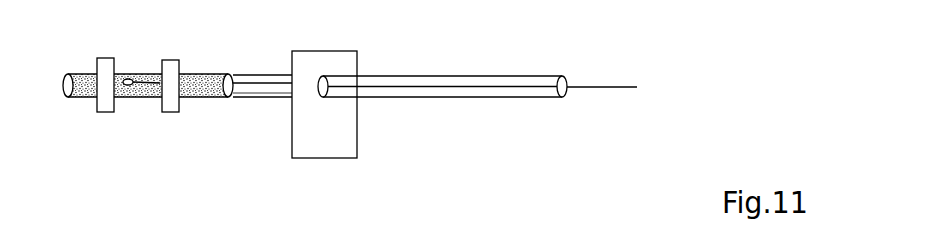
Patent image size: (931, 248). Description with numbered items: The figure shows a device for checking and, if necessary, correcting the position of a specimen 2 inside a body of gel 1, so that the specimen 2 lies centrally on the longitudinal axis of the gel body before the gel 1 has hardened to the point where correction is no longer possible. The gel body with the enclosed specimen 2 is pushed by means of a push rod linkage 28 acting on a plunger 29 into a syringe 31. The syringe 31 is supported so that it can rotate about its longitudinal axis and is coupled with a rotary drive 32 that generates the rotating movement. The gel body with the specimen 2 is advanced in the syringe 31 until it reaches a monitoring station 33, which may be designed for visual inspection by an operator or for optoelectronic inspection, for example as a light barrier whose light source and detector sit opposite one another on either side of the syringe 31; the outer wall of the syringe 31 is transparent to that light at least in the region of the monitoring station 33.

The gel 1 is at (67, 77).
The specimen 2 is at (122, 78).
The monitoring station 33 is at (172, 112).
The plunger 29 is at (230, 99).
The rotary drive 32 is at (343, 137).
The syringe 31 is at (482, 99).
The push rod linkage 28 is at (581, 90).